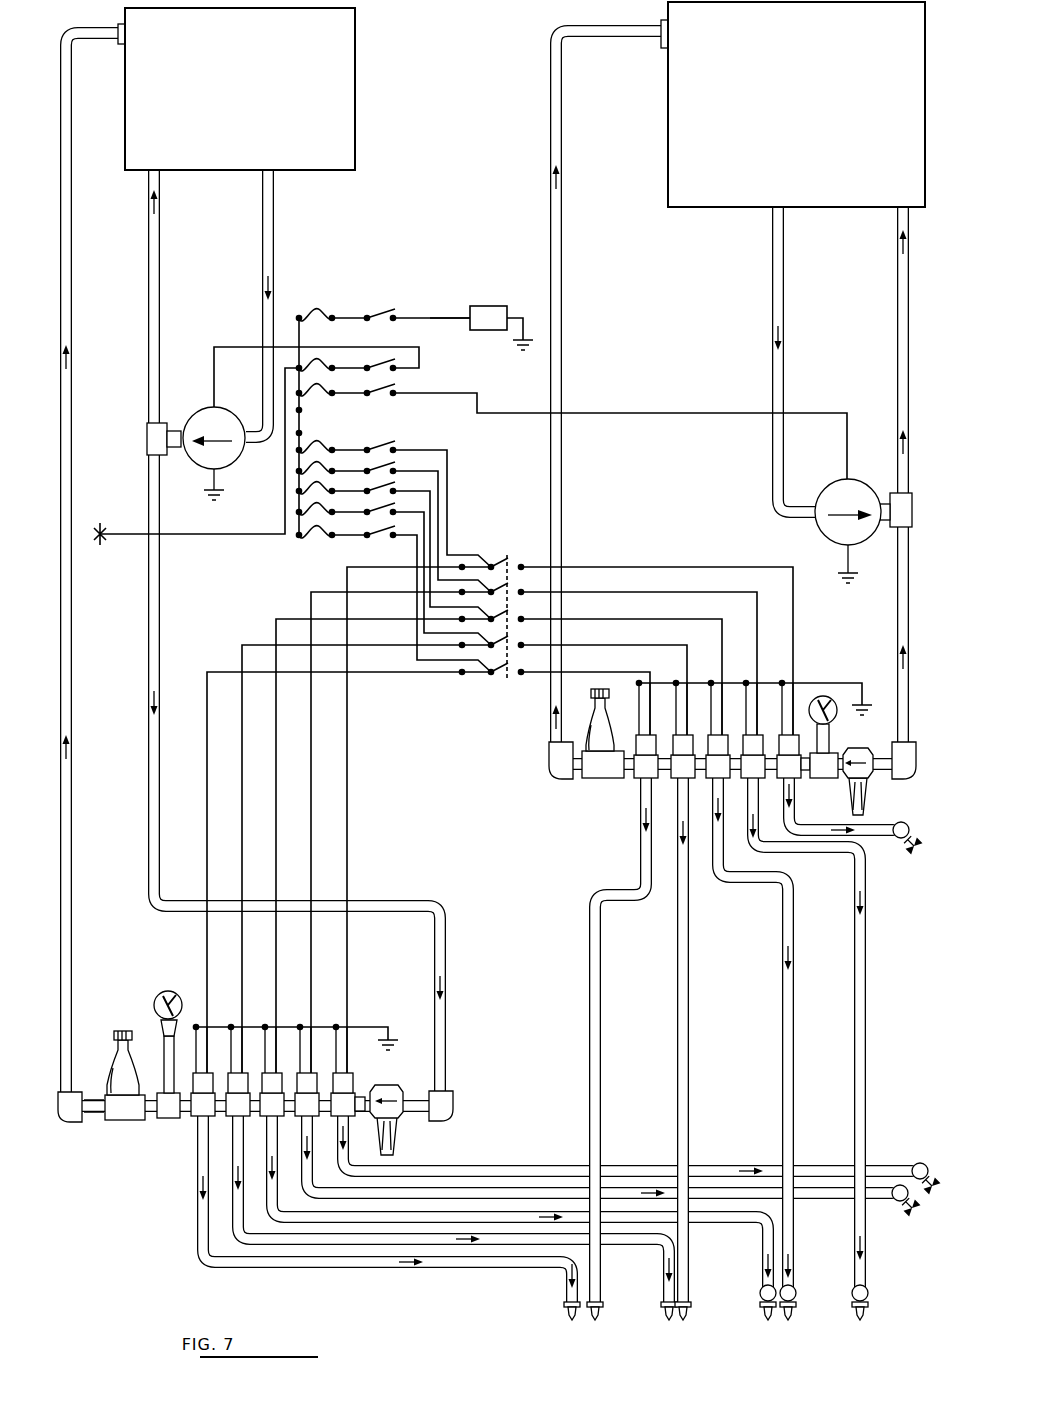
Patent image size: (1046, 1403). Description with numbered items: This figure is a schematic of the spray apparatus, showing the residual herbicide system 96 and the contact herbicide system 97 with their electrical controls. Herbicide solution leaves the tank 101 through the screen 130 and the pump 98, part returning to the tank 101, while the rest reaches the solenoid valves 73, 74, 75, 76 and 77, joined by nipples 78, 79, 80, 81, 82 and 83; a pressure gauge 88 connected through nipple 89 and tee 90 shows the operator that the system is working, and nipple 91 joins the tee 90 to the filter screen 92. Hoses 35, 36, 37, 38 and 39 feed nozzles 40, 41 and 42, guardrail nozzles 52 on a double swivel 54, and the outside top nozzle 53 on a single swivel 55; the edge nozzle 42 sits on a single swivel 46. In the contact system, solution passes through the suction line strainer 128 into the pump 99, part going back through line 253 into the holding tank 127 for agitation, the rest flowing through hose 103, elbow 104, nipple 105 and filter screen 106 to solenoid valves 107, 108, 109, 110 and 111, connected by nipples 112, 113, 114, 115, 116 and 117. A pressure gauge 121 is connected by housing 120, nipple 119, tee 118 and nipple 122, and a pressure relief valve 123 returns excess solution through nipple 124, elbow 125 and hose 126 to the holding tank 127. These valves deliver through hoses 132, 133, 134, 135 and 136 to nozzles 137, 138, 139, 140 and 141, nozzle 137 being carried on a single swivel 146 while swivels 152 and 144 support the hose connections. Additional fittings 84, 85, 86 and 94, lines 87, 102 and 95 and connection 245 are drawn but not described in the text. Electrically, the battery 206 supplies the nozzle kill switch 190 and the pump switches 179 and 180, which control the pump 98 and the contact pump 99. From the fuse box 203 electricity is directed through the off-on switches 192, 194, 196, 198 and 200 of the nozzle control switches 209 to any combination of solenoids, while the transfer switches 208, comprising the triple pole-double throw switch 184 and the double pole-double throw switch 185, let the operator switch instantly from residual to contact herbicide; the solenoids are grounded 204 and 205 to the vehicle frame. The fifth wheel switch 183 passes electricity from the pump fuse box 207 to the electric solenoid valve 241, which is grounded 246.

The holding tank 127 is at (218, 108).
The tank 101 is at (777, 104).
The hose 126 is at (78, 315).
The line 253 is at (163, 315).
The suction line strainer 128 is at (275, 238).
The hose 103 is at (448, 1020).
The return pipe 87 is at (565, 240).
The screen 130 is at (771, 232).
The pump outlet pipe 102 is at (895, 365).
The supply pipe 95 is at (912, 600).
The pump 99 is at (205, 466).
The pump 98 is at (839, 540).
The pump fuse box 207 is at (311, 306).
The fifth wheel switch 183 is at (380, 315).
The wire 245 is at (430, 316).
The electric solenoid valve 241 is at (489, 306).
The ground 246 is at (513, 347).
The off-on switch 180 is at (380, 366).
The off-on switch 179 is at (380, 392).
The nozzle kill switch 190 is at (303, 430).
The nozzle control switches 209 is at (410, 442).
The off-on switch 192 is at (380, 447).
The off-on switch 194 is at (380, 468).
The off-on switch 196 is at (380, 488).
The off-on switch 198 is at (380, 509).
The off-on switch 200 is at (380, 532).
The transfer switches 208 is at (493, 546).
The triple pole-double throw switch 184 is at (509, 618).
The double pole-double throw switch 185 is at (509, 671).
The fuse box 203 is at (297, 549).
The battery 206 is at (196, 465).
The residual herbicide system 96 is at (550, 789).
The elbow 86 is at (548, 764).
The sight bottle 85 is at (586, 736).
The inlet block 84 is at (592, 780).
The solenoid valve 77 is at (642, 742).
The solenoid valve 76 is at (679, 742).
The solenoid valve 75 is at (714, 742).
The solenoid valve 74 is at (749, 742).
The solenoid valve 73 is at (785, 742).
The nipple 83 is at (632, 772).
The nipple 82 is at (668, 772).
The nipple 81 is at (703, 772).
The nipple 80 is at (738, 772).
The nipple 79 is at (774, 772).
The nipple 78 is at (808, 775).
The pressure gauge 88 is at (834, 699).
The nipple 89 is at (830, 744).
The tee 90 is at (820, 772).
The nipple 91 is at (848, 785).
The filter screen 92 is at (873, 787).
The elbow 94 is at (913, 760).
The hose 35 is at (602, 920).
The hose 36 is at (690, 920).
The hose 37 is at (795, 920).
The hose 38 is at (867, 920).
The hose 39 is at (876, 829).
The single swivel 55 is at (909, 828).
The outside top nozzle 53 is at (912, 852).
The ground 205 is at (867, 697).
The ground 204 is at (394, 1040).
The contact herbicide system 97 is at (188, 1174).
The elbow 125 is at (72, 1121).
The nipple 124 is at (95, 1119).
The pressure relief valve 123 is at (124, 1116).
The tee 118 is at (153, 1092).
The nipple 122 is at (152, 1119).
The nipple 119 is at (163, 1050).
The housing 120 is at (162, 1028).
The pressure gauge 121 is at (170, 990).
The solenoid valve 111 is at (198, 1081).
The solenoid valve 110 is at (233, 1082).
The solenoid valve 109 is at (267, 1082).
The solenoid valve 108 is at (302, 1082).
The solenoid valve 107 is at (350, 1084).
The nipple 117 is at (188, 1112).
The nipple 116 is at (222, 1112).
The nipple 115 is at (256, 1112).
The nipple 114 is at (291, 1112).
The nipple 113 is at (326, 1112).
The nipple 112 is at (363, 1118).
The nipple 105 is at (409, 1112).
The filter screen 106 is at (400, 1140).
The elbow 104 is at (453, 1103).
The hose 132 is at (883, 1168).
The hose 133 is at (823, 1198).
The hose 134 is at (727, 1222).
The hose 135 is at (631, 1245).
The hose 136 is at (491, 1268).
The single swivel 146 is at (923, 1163).
The nozzle 137 is at (940, 1185).
The single swivel 152 is at (903, 1199).
The nozzle 138 is at (919, 1214).
The single swivel 144 is at (760, 1293).
The single swivel 46 is at (797, 1293).
The double swivel 54 is at (869, 1293).
The nozzle 141 is at (566, 1314).
The spray nozzle 40 is at (598, 1314).
The nozzle 140 is at (665, 1314).
The spray nozzle 41 is at (688, 1314).
The nozzle 139 is at (764, 1314).
The edge nozzle 42 is at (792, 1314).
The guardrail nozzles 52 is at (865, 1314).